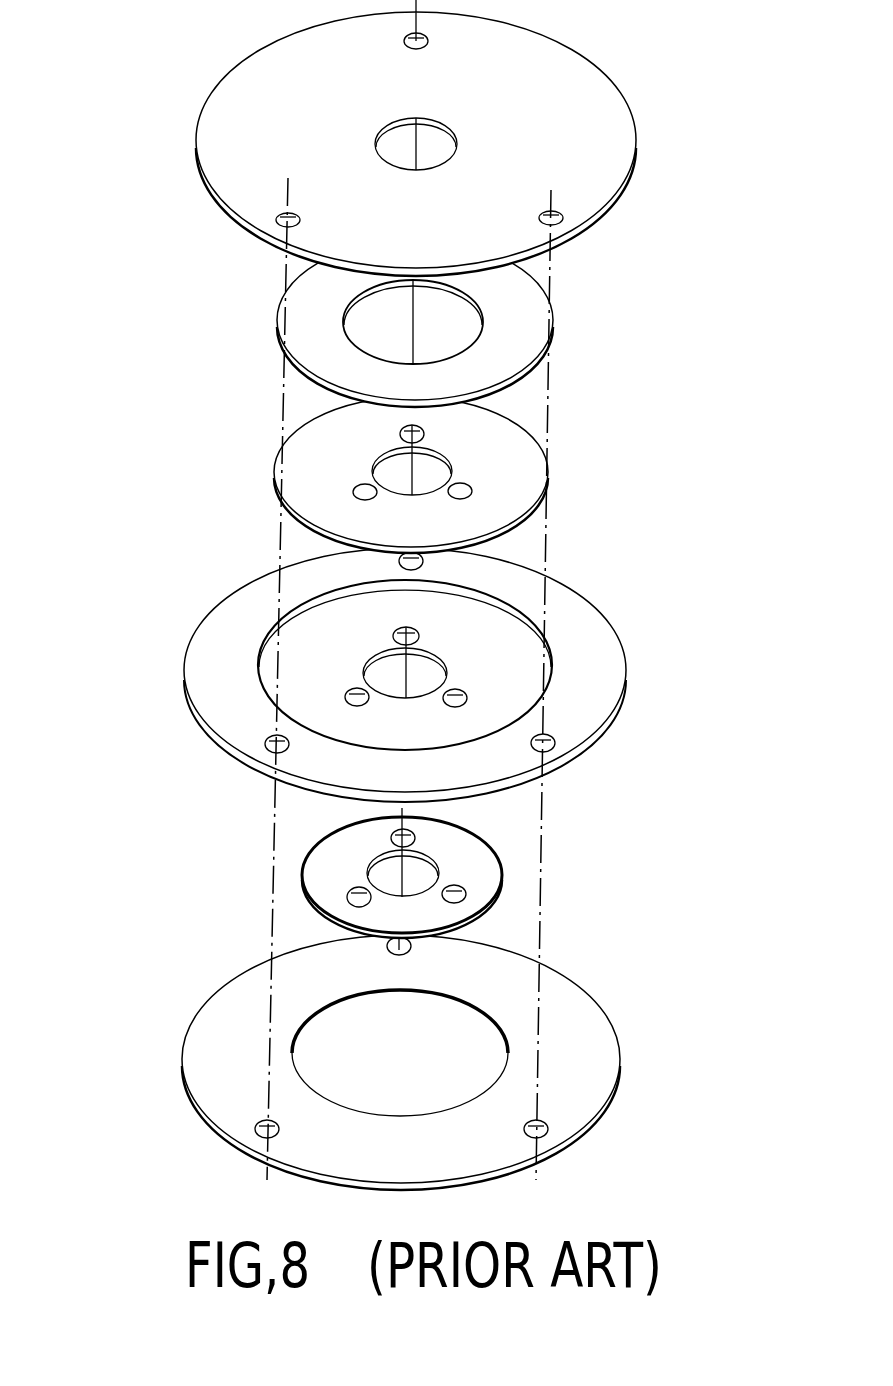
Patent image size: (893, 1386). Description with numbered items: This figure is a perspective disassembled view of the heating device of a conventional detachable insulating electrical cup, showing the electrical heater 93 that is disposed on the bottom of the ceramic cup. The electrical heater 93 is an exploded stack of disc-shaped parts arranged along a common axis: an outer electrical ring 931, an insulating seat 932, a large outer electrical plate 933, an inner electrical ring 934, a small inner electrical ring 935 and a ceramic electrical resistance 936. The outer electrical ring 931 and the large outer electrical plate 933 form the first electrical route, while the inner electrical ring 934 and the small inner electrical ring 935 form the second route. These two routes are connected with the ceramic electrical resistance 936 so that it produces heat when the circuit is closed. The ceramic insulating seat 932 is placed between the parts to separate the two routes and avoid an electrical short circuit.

The electrical heater 93 is at (138, 522).
The outer electrical ring 931 is at (592, 1040).
The insulating seat 932 is at (608, 660).
The large outer electrical plate 933 is at (608, 148).
The inner electrical ring 934 is at (482, 874).
The small inner electrical ring 935 is at (532, 468).
The ceramic electrical resistance 936 is at (550, 320).